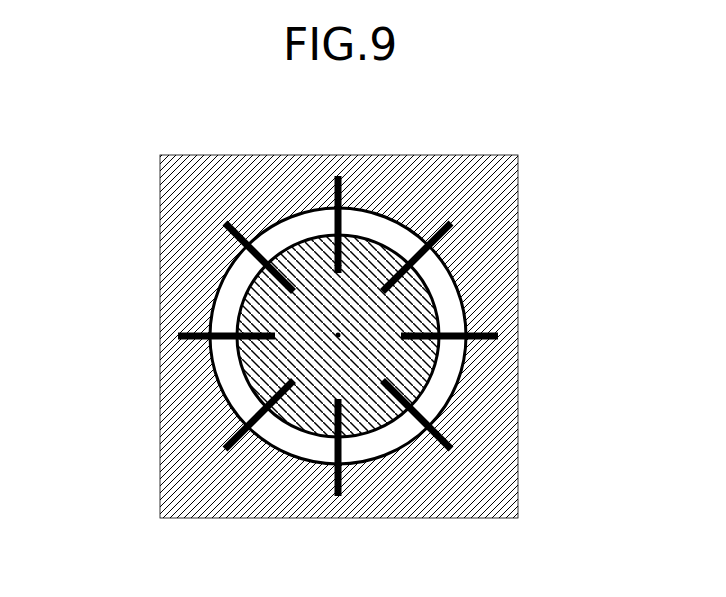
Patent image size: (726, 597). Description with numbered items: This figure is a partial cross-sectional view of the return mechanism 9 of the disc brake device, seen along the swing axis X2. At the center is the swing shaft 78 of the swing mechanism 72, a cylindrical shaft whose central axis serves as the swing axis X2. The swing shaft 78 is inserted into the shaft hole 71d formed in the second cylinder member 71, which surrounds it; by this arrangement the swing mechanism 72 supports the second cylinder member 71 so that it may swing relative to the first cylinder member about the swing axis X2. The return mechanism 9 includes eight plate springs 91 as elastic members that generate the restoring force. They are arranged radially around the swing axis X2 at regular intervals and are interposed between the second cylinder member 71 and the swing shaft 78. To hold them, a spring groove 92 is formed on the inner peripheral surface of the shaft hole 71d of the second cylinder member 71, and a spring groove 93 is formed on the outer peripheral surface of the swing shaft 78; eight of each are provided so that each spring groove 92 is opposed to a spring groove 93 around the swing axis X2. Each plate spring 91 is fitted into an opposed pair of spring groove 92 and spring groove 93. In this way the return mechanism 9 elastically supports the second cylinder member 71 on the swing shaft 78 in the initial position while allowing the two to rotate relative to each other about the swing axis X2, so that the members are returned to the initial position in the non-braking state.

The return mechanism 9 is at (177, 191).
The second cylinder member 71 is at (178, 165).
The shaft hole 71d is at (282, 440).
The swing shaft 78 is at (252, 336).
The swing mechanism 72 is at (233, 284).
The plate spring 91 is at (409, 246).
The spring groove 92 is at (330, 172).
The spring groove 93 is at (287, 377).
The swing axis X2 is at (329, 327).